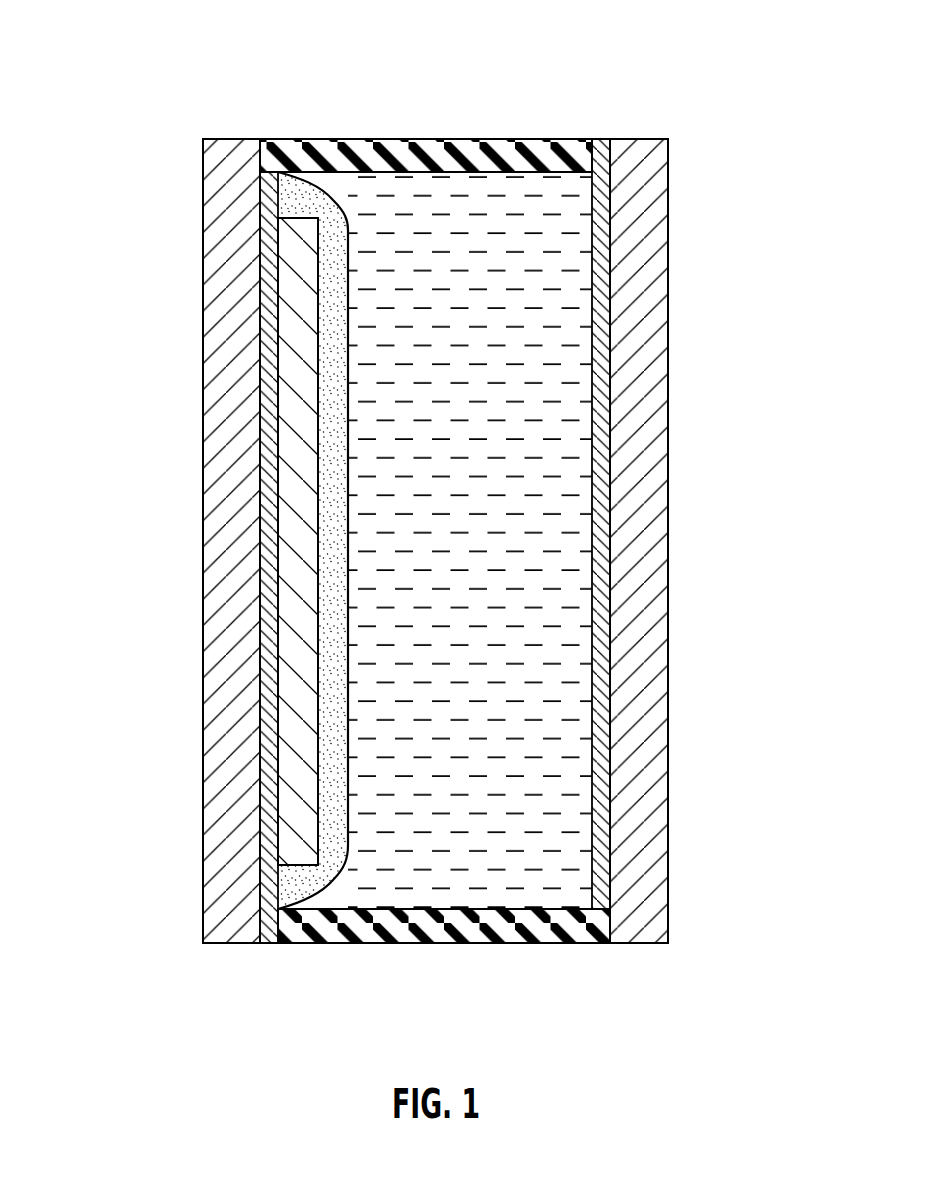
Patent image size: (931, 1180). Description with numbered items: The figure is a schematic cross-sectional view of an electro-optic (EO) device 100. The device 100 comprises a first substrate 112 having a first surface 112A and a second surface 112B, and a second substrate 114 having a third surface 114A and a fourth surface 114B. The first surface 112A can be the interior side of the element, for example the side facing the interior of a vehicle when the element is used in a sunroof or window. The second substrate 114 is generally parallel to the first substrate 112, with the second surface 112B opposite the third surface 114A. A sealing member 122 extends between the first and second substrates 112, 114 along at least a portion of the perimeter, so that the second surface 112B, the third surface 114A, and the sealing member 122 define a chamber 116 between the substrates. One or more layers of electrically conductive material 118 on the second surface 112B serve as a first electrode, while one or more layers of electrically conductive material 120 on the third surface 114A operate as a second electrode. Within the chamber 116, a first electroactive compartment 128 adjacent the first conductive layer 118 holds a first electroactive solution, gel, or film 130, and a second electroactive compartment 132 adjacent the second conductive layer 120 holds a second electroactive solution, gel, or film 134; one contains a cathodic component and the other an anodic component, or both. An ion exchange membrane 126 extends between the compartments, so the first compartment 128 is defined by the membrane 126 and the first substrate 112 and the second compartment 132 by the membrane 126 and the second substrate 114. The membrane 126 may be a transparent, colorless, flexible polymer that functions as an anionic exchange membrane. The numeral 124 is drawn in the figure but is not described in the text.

The electro-optic device 100 is at (218, 28).
The first substrate 112 is at (236, 327).
The first surface 112A is at (203, 184).
The second surface 112B is at (260, 250).
The second substrate 114 is at (632, 325).
The third surface 114A is at (610, 250).
The fourth surface 114B is at (668, 185).
The chamber 116 is at (440, 225).
The electrically conductive material 118 is at (263, 402).
The electrically conductive material 120 is at (598, 405).
The sealing member 122 is at (539, 147).
The electrolyte region 124 is at (548, 500).
The ion exchange membrane 126 is at (335, 464).
The first electroactive compartment 128 is at (300, 598).
The first electroactive solution, gel, or film 130 is at (302, 822).
The second electroactive compartment 132 is at (552, 652).
The second electroactive solution, gel, or film 134 is at (545, 842).